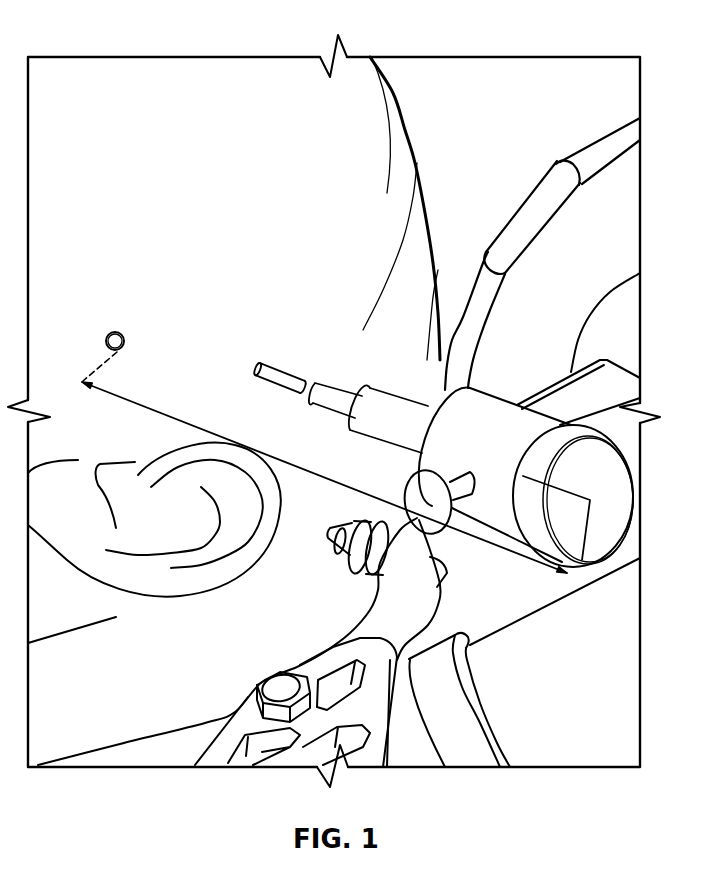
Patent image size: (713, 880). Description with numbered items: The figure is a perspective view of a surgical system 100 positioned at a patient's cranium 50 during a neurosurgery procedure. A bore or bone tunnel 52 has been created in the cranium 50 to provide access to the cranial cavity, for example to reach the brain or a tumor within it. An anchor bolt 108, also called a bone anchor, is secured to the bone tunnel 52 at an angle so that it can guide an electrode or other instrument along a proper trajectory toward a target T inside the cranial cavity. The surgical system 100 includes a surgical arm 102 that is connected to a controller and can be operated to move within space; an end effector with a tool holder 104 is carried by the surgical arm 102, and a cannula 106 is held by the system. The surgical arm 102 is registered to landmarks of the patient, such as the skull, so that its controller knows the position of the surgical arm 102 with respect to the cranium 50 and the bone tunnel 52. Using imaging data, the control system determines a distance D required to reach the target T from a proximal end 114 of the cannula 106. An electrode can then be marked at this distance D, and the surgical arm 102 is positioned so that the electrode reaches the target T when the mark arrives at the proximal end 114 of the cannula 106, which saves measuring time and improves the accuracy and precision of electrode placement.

The cranium 50 is at (207, 87).
The target T is at (112, 332).
The distance D is at (347, 487).
The bone tunnel 52 is at (253, 362).
The anchor bolt 108 is at (278, 378).
The surgical system 100 is at (597, 243).
The surgical arm 102 is at (602, 383).
The cannula 106 is at (573, 438).
The proximal end 114 is at (567, 537).
The tool holder 104 is at (507, 492).